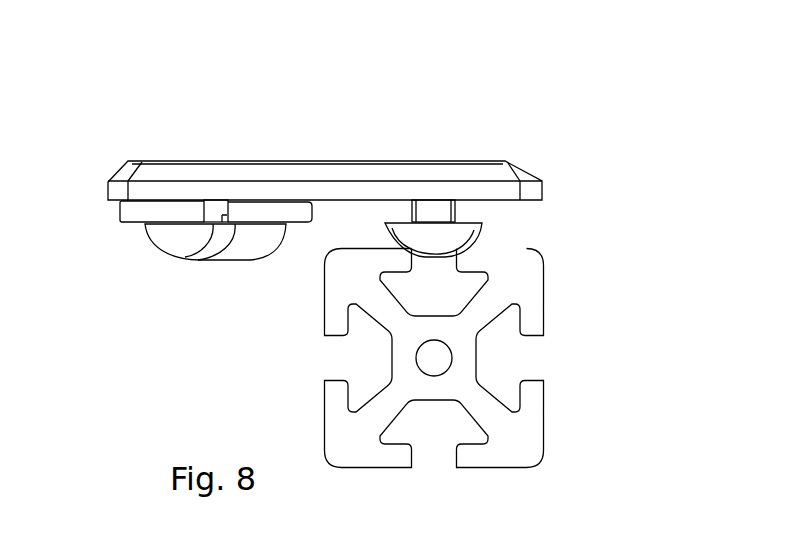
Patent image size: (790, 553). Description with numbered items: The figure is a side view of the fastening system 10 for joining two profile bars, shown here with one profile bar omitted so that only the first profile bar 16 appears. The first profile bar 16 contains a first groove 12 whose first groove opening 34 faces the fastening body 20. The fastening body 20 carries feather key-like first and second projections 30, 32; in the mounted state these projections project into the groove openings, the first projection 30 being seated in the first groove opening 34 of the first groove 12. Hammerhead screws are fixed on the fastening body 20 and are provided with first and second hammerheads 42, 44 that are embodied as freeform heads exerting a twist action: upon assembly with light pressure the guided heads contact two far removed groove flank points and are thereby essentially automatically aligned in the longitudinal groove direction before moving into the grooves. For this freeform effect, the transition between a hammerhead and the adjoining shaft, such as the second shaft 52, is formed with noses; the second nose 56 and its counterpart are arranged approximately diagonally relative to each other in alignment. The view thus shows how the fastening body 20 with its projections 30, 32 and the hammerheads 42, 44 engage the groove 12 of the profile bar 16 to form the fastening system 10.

The fastening system 10 is at (410, 106).
The first groove 12 is at (448, 297).
The first profile bar 16 is at (462, 355).
The fastening body 20 is at (373, 173).
The first projection 30 is at (435, 208).
The second projection 32 is at (137, 211).
The first groove opening 34 is at (420, 277).
The first hammerhead 42 is at (432, 238).
The second hammerhead 44 is at (173, 237).
The second shaft 52 is at (218, 212).
The second nose 56 is at (218, 212).